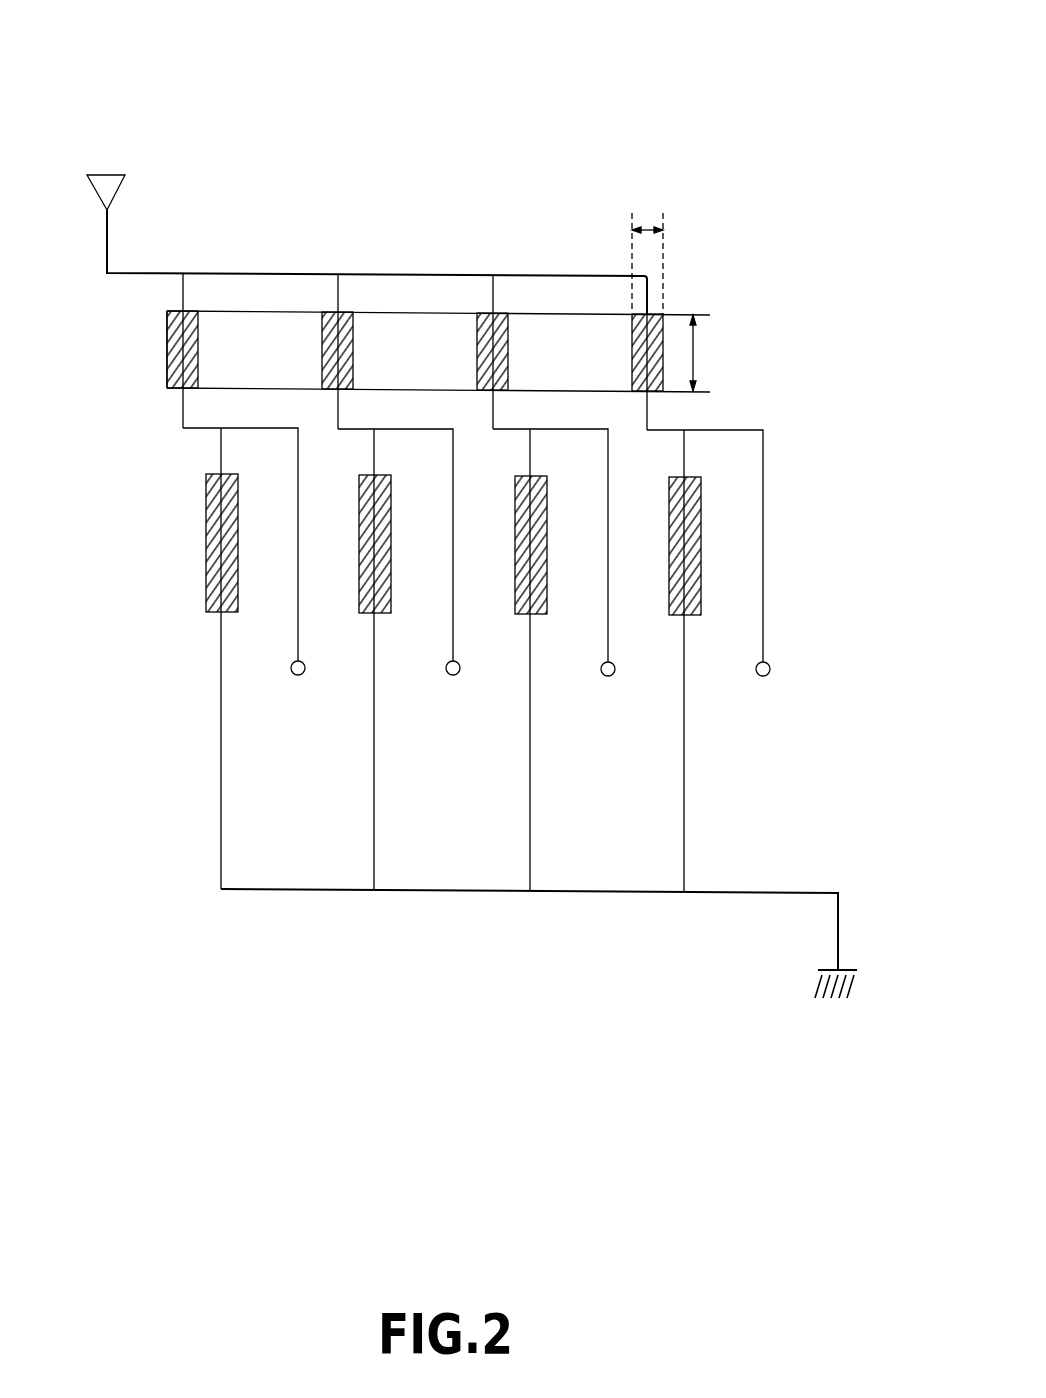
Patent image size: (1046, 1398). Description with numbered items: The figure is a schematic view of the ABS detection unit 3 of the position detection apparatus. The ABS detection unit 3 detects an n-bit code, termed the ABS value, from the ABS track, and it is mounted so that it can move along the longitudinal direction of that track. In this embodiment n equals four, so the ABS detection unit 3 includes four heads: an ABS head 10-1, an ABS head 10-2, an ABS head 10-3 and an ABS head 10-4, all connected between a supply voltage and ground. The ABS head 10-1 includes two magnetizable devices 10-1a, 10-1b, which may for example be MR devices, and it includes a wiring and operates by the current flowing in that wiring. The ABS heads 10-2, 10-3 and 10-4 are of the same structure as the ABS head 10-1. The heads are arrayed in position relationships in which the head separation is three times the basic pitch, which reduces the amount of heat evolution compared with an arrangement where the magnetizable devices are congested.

The ABS detection unit 3 is at (383, 80).
The ABS head 10-1 is at (188, 428).
The magnetizable device 10-1a is at (167, 352).
The magnetizable device 10-1b is at (207, 596).
The ABS head 10-2 is at (343, 429).
The ABS head 10-3 is at (500, 430).
The ABS head 10-4 is at (653, 430).